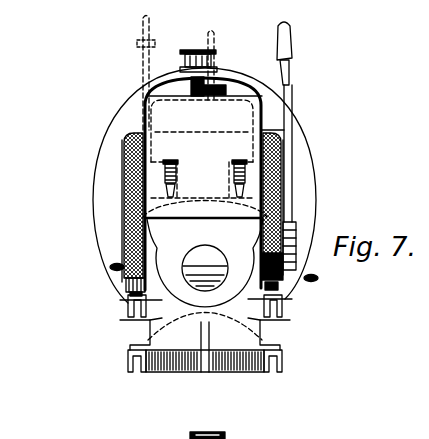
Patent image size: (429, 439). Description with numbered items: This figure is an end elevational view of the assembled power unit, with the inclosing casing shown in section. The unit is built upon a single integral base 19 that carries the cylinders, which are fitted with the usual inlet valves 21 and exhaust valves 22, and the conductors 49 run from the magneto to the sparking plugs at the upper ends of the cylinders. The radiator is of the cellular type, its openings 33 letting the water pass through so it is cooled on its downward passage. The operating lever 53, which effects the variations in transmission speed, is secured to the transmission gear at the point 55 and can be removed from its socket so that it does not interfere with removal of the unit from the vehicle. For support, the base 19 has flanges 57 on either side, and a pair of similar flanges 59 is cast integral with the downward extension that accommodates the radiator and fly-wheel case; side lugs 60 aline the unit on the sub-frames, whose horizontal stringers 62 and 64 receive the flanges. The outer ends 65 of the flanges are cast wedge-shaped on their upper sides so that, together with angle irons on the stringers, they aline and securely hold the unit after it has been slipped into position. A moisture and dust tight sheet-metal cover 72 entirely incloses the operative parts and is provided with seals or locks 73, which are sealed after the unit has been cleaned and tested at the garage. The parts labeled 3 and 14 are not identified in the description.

The outer casing 3 is at (127, 246).
The bearing body 14 is at (204, 258).
The base 19 is at (274, 210).
The inlet valves 21 is at (160, 172).
The exhaust valves 22 is at (247, 167).
The openings 33 is at (123, 213).
The conductors 49 is at (244, 104).
The operating lever 53 is at (291, 98).
The point of securement 55 is at (284, 262).
The flanges 57 is at (128, 293).
The flanges 59 is at (130, 345).
The side lugs 60 is at (150, 320).
The horizontal stringers 62 is at (130, 307).
The horizontal stringers 64 is at (127, 363).
The outer ends of flanges 65 is at (130, 287).
The cover 72 is at (143, 118).
The seals or locks 73 is at (110, 265).